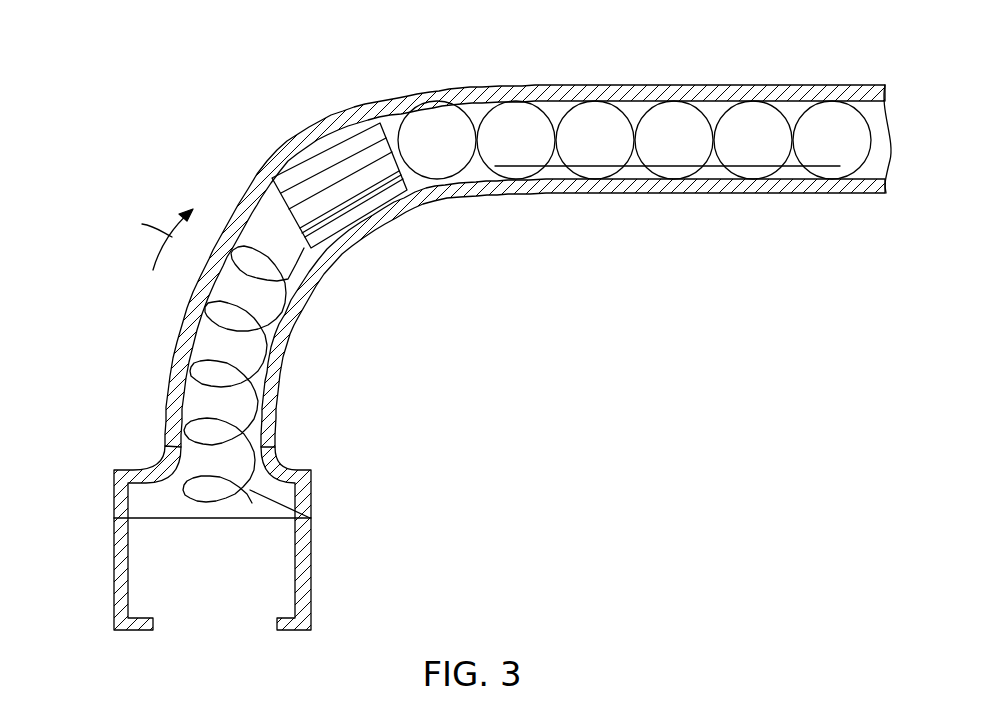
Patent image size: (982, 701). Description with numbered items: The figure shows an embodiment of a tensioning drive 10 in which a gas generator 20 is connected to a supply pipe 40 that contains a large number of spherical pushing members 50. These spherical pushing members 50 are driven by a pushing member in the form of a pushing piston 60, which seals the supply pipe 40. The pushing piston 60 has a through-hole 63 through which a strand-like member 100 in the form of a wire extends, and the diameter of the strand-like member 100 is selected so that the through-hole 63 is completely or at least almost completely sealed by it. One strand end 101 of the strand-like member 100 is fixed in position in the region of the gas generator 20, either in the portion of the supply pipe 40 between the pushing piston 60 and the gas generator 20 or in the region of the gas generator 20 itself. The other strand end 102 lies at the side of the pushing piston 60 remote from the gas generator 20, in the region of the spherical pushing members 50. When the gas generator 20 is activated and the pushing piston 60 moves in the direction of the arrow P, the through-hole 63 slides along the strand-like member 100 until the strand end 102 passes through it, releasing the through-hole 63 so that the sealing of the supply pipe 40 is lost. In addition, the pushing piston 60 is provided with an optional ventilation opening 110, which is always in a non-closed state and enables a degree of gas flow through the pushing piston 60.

The tensioning drive 10 is at (92, 224).
The gas generator 20 is at (140, 570).
The supply pipe 40 is at (163, 413).
The spherical pushing members 50 is at (452, 122).
The pushing piston 60 is at (333, 178).
The through-hole 63 is at (397, 165).
The strand-like member 100 is at (269, 382).
The strand end 101 is at (300, 508).
The other strand end 102 is at (797, 168).
The ventilation opening 110 is at (310, 173).